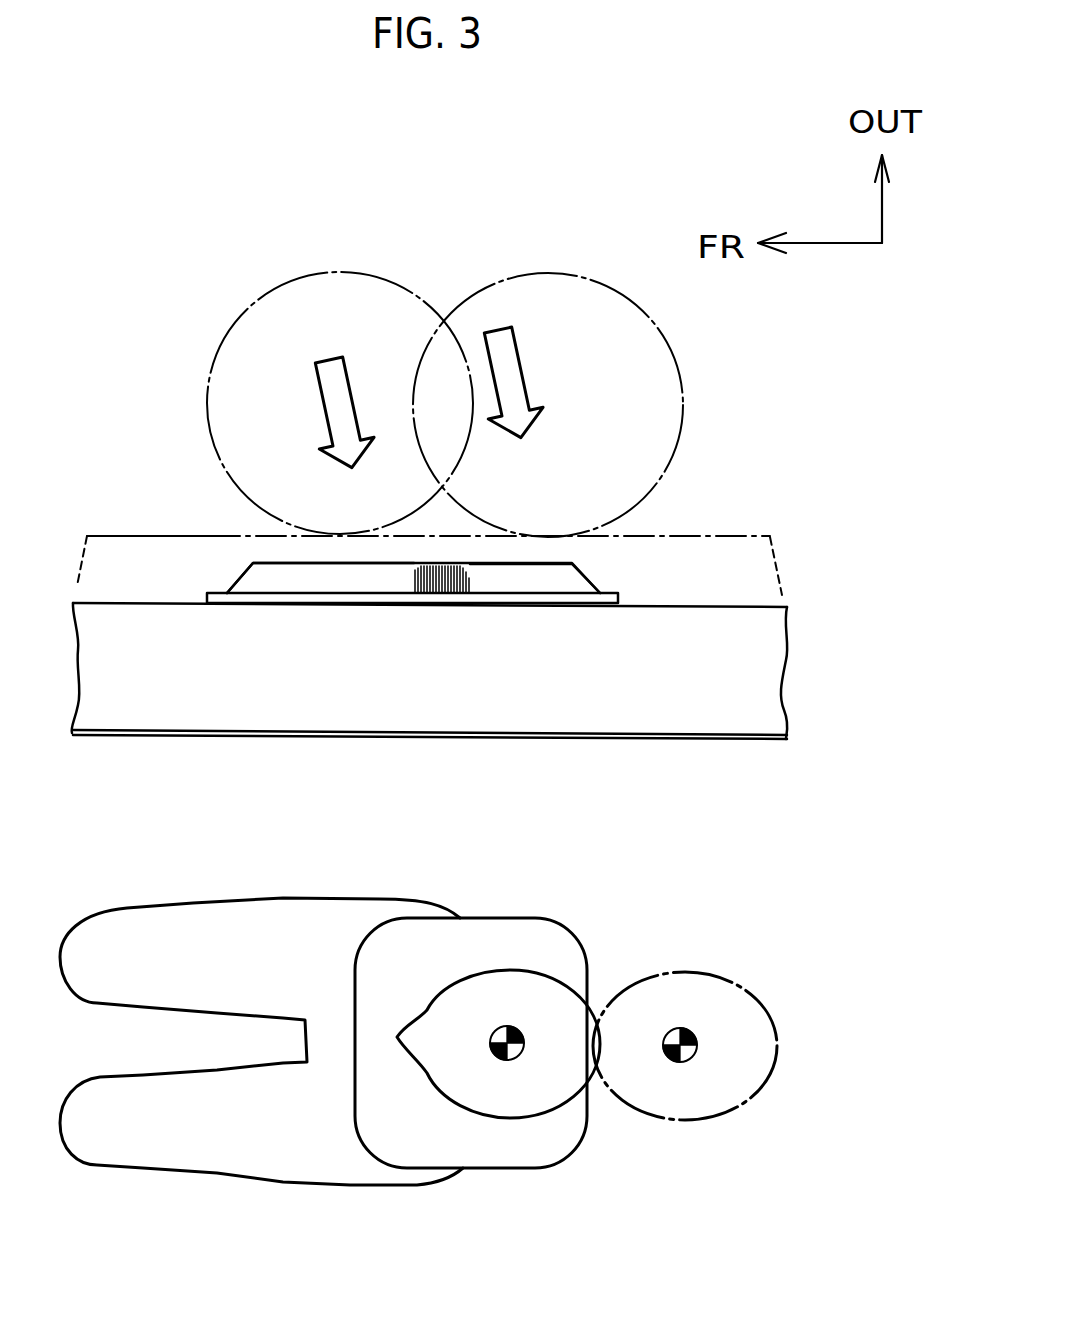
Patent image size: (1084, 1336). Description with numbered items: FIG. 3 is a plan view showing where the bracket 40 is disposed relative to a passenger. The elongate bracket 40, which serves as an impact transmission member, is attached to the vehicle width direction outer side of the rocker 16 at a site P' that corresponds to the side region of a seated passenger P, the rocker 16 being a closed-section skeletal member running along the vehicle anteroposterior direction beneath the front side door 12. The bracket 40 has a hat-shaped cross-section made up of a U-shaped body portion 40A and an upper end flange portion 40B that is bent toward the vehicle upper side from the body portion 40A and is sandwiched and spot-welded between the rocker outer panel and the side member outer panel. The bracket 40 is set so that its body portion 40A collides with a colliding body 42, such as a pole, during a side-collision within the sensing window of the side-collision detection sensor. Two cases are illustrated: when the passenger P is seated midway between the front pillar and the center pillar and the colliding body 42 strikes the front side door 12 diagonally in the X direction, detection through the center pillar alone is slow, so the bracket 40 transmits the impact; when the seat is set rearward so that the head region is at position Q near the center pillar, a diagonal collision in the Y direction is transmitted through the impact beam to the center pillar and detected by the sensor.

The front side door 12 is at (712, 537).
The rocker 16 is at (791, 705).
The bracket 40 is at (590, 577).
The body portion 40A is at (497, 560).
The upper end flange portion 40B is at (307, 600).
The colliding body 42 is at (349, 270).
The X direction X is at (313, 377).
The Y direction Y is at (523, 357).
The seated passenger P is at (498, 1109).
The site corresponding to the side region of the seated passenger P' is at (471, 997).
The position of the head region of the passenger Q is at (733, 1110).